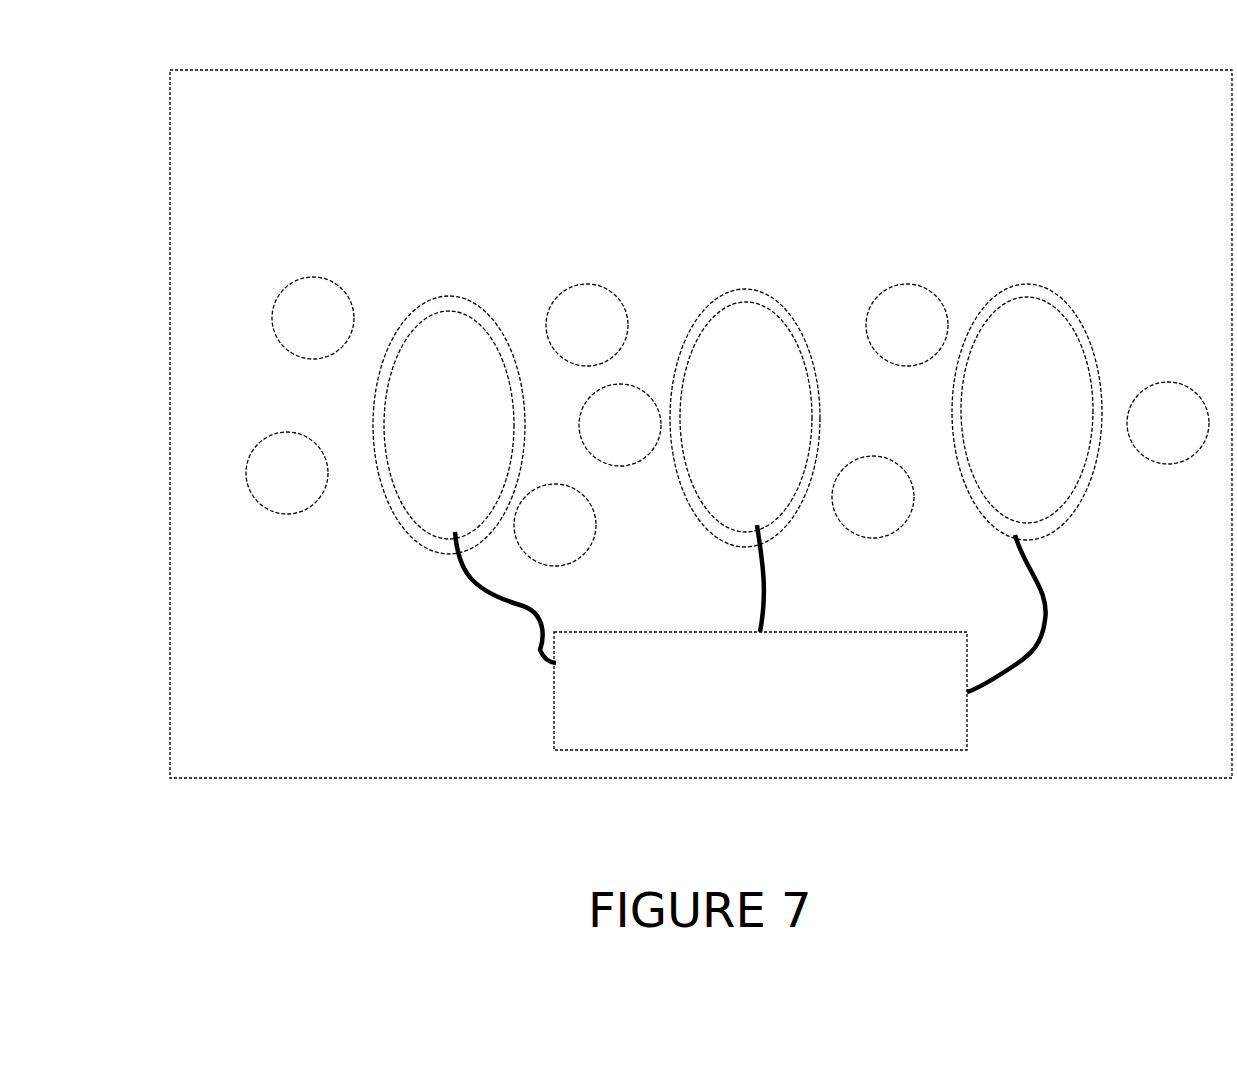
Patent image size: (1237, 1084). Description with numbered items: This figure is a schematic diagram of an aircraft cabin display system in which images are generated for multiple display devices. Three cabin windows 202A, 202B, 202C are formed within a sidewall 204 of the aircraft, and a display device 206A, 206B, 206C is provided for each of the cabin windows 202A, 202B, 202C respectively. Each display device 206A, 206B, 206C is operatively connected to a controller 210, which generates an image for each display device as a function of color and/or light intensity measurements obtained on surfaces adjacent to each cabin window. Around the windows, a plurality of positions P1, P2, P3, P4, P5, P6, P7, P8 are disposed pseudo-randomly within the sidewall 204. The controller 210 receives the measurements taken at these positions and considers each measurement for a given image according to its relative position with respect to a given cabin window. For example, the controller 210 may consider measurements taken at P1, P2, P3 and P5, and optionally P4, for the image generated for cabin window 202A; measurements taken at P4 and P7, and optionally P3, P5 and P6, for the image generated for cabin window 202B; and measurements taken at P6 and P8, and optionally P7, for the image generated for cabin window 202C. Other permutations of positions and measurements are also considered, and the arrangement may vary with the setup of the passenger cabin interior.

The sidewall 204 is at (701, 424).
The cabin window 202A is at (448, 318).
The cabin window 202B is at (733, 307).
The cabin window 202C is at (1020, 295).
The display device 206A is at (485, 300).
The display device 206B is at (775, 292).
The display device 206C is at (1055, 288).
The controller 210 is at (750, 637).
The position P1 is at (313, 318).
The position P2 is at (287, 473).
The position P3 is at (587, 325).
The position P4 is at (620, 425).
The position P5 is at (555, 525).
The position P6 is at (907, 325).
The position P7 is at (873, 497).
The position P8 is at (1168, 423).